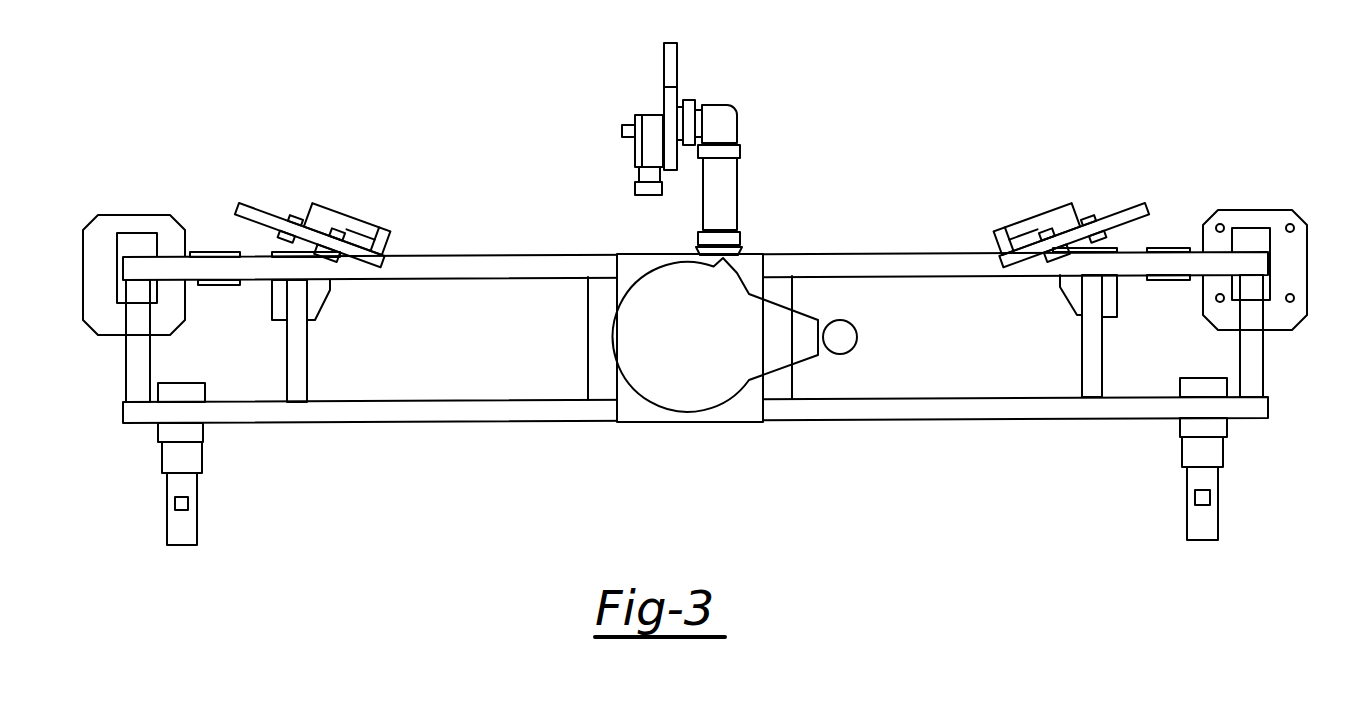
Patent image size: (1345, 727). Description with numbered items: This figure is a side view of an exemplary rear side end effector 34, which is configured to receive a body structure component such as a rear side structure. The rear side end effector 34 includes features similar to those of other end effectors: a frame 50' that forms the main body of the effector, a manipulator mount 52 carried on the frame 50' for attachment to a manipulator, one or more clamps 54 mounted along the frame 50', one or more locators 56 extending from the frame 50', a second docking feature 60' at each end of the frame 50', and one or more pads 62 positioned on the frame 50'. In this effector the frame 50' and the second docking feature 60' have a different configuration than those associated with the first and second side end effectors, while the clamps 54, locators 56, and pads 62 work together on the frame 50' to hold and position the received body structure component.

The rear side end effector 34 is at (1043, 88).
The frame 50' is at (695, 287).
The manipulator mount 52 is at (713, 350).
The clamp 54 is at (337, 212).
The locator 56 is at (188, 523).
The second docking feature 60' is at (710, 220).
The pad 62 is at (215, 284).